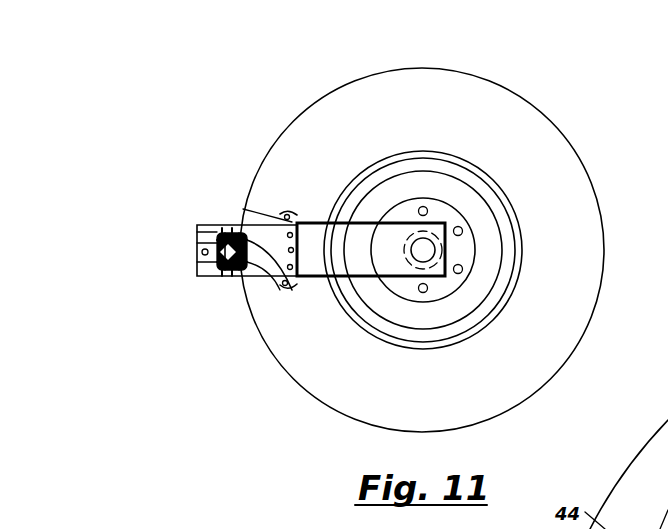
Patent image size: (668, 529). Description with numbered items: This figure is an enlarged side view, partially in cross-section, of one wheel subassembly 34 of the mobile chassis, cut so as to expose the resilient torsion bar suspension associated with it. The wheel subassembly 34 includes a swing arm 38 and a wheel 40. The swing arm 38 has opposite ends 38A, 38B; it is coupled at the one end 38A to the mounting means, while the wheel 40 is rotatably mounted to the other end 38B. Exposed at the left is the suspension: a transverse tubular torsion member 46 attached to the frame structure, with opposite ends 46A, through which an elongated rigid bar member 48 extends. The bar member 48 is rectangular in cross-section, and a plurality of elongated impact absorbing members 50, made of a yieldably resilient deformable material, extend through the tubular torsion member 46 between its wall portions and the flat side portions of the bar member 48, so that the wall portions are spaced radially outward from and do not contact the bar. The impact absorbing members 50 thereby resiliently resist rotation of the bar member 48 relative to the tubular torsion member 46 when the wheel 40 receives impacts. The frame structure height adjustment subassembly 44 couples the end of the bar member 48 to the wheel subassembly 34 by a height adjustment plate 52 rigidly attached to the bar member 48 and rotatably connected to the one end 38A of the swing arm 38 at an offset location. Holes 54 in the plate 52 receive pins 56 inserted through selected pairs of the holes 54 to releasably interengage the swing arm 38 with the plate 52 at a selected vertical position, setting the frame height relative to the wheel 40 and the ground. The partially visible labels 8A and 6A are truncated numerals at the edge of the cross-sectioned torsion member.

The wheel subassembly 34 is at (273, 133).
The swing arm 38 is at (373, 248).
The one end of swing arm 38A is at (214, 235).
The other end of swing arm 38B is at (433, 268).
The wheel 40 is at (560, 208).
The frame structure height adjustment subassembly 44 is at (270, 209).
The tubular torsion member 46 is at (212, 278).
The opposite ends of tubular torsion member 46A is at (220, 233).
The rigid bar member 48 is at (250, 248).
The impact absorbing members 50 is at (233, 233).
The height adjustment plate 52 is at (284, 213).
The holes 54 is at (292, 214).
The pins 56 is at (297, 250).
The portion 8A is at (210, 252).
The portion 6A is at (215, 255).